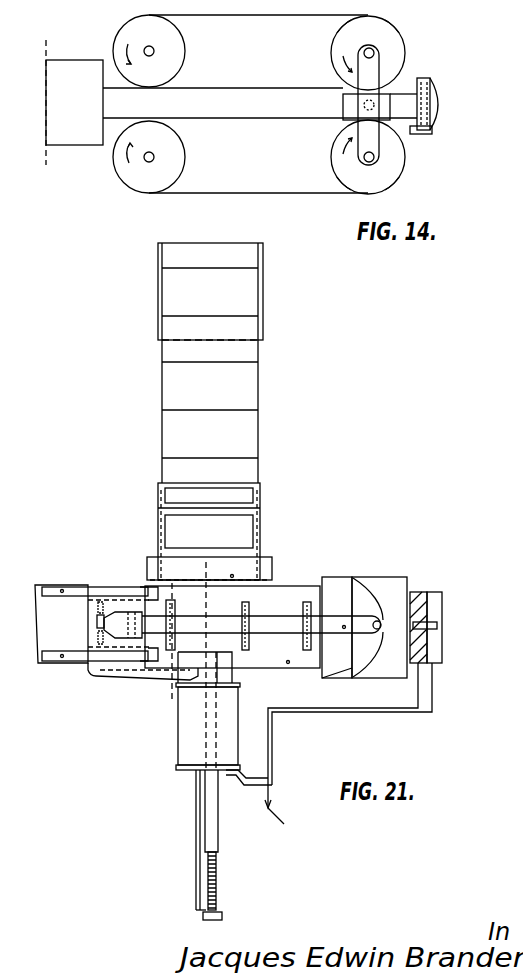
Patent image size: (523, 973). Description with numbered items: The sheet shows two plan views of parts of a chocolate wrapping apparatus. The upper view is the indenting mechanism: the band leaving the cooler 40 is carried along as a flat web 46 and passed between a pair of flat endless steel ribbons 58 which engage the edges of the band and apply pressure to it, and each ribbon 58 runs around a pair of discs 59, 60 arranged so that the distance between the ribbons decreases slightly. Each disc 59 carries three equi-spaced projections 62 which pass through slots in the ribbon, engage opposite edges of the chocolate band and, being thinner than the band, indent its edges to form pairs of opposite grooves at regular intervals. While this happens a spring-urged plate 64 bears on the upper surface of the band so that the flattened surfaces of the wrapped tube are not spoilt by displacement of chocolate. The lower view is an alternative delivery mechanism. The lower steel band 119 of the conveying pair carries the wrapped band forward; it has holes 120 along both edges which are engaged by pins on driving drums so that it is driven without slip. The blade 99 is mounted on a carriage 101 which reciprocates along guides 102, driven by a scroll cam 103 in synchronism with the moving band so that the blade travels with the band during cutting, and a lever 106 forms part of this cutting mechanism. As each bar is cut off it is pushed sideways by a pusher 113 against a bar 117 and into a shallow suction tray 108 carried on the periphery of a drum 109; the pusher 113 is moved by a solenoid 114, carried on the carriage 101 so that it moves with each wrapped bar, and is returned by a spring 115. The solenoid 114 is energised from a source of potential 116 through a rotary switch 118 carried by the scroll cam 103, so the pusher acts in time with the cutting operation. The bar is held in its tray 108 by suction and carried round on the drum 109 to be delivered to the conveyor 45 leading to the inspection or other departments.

In FIG. 14, the cooler 40 is at (68, 148).
In FIG. 14, the web 46 is at (170, 100).
In FIG. 14, the flat endless steel ribbon 58 is at (224, 17).
In FIG. 14, the disc 59 is at (405, 60).
In FIG. 14, the disc 60 is at (120, 28).
In FIG. 14, the projection 62 is at (396, 29).
In FIG. 14, the plate 64 is at (343, 112).
In FIG. 21, the conveyor 45 is at (259, 387).
In FIG. 21, the blade 99 is at (97, 634).
In FIG. 21, the carriage 101 is at (113, 673).
In FIG. 21, the guides 102 is at (52, 589).
In FIG. 21, the cam 103 is at (382, 580).
In FIG. 21, the lever 106 is at (188, 630).
In FIG. 21, the tray 108 is at (170, 494).
In FIG. 21, the drum 109 is at (170, 518).
In FIG. 21, the pusher 113 is at (235, 654).
In FIG. 21, the solenoid 114 is at (178, 751).
In FIG. 21, the spring 115 is at (216, 887).
In FIG. 21, the source of potential 116 is at (329, 748).
In FIG. 21, the bar 117 is at (238, 514).
In FIG. 21, the rotary switch 118 is at (419, 590).
In FIG. 21, the steel band 119 is at (298, 586).
In FIG. 21, the holes 120 is at (233, 577).